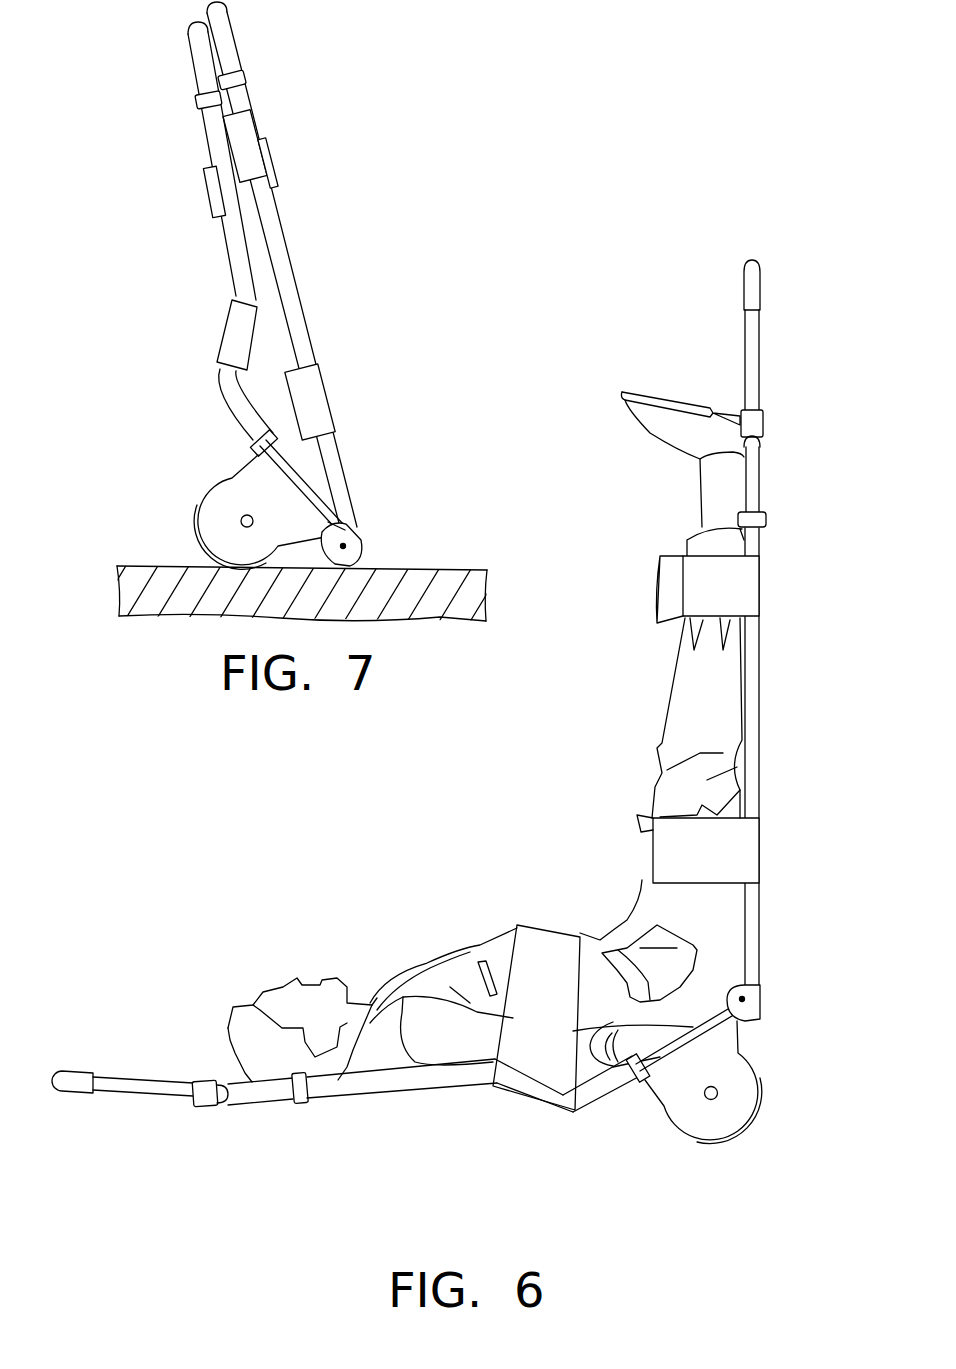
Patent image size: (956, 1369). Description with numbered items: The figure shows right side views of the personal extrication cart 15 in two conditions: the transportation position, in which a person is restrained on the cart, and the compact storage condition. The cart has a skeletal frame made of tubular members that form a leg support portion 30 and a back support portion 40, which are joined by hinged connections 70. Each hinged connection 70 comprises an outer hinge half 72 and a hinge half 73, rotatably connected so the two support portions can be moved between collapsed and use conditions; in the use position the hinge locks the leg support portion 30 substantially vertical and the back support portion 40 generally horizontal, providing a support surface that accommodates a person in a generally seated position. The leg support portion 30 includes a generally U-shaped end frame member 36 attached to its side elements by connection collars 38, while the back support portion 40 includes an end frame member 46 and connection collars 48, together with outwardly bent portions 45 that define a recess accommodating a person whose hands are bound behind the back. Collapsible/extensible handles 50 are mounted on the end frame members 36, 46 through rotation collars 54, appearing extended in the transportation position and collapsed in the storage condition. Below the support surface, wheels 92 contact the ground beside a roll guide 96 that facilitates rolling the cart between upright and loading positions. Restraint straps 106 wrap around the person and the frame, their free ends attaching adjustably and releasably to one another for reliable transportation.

In FIG. 6, the personal extrication cart 15 is at (498, 1137).
In FIG. 7, the leg support portion 30 is at (316, 312).
In FIG. 6, the leg support portion 30 is at (774, 712).
In FIG. 6, the end frame member 36 is at (755, 481).
In FIG. 6, the connection collars 38 is at (762, 522).
In FIG. 7, the back support portion 40 is at (195, 362).
In FIG. 6, the back support portion 40 is at (458, 1107).
In FIG. 6, the outwardly bent portions 45 is at (546, 1122).
In FIG. 6, the end frame member 46 is at (270, 1096).
In FIG. 6, the connection collars 48 is at (304, 1104).
In FIG. 6, the collapsible/extensible handles 50 is at (726, 324).
In FIG. 6, the rotation collars 54 is at (753, 420).
In FIG. 7, the hinged connections 70 is at (406, 506).
In FIG. 6, the hinged connections 70 is at (774, 984).
In FIG. 7, the outer hinge half 72 is at (355, 550).
In FIG. 7, the hinge half 73 is at (338, 529).
In FIG. 7, the wheels 92 is at (224, 512).
In FIG. 6, the wheels 92 is at (749, 1109).
In FIG. 7, the roll guide 96 is at (283, 507).
In FIG. 6, the roll guide 96 is at (697, 1112).
In FIG. 6, the restraint straps 106 is at (752, 585).